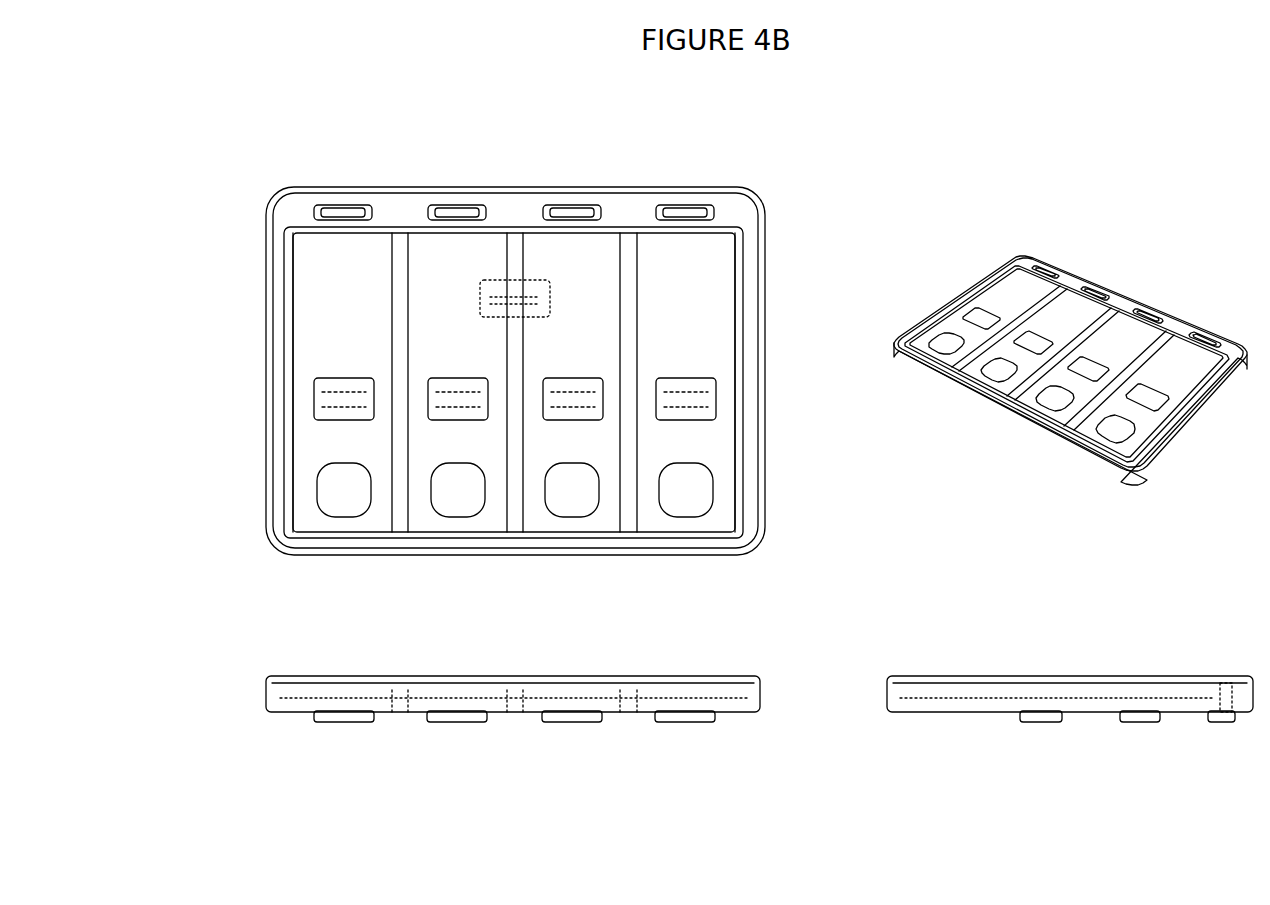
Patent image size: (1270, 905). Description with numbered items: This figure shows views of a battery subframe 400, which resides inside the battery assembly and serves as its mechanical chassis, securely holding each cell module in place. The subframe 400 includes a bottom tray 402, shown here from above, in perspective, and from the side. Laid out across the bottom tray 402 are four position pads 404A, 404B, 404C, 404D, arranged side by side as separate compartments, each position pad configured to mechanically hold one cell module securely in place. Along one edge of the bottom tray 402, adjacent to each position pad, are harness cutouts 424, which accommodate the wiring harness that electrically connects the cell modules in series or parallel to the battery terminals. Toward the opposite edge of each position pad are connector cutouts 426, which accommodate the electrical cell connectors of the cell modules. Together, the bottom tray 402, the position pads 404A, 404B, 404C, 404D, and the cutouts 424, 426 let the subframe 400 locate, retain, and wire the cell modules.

The battery subframe 400 is at (234, 111).
The bottom tray 402 is at (267, 472).
The position pad 404A is at (373, 347).
The position pad 404B is at (489, 347).
The position pad 404C is at (602, 347).
The position pad 404D is at (717, 347).
The harness cutouts 424 is at (320, 212).
The connector cutouts 426 is at (357, 517).